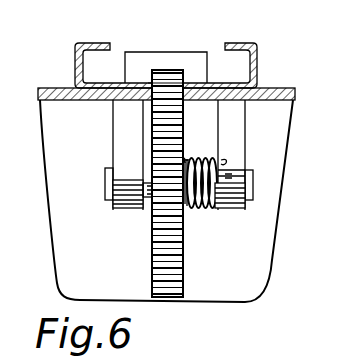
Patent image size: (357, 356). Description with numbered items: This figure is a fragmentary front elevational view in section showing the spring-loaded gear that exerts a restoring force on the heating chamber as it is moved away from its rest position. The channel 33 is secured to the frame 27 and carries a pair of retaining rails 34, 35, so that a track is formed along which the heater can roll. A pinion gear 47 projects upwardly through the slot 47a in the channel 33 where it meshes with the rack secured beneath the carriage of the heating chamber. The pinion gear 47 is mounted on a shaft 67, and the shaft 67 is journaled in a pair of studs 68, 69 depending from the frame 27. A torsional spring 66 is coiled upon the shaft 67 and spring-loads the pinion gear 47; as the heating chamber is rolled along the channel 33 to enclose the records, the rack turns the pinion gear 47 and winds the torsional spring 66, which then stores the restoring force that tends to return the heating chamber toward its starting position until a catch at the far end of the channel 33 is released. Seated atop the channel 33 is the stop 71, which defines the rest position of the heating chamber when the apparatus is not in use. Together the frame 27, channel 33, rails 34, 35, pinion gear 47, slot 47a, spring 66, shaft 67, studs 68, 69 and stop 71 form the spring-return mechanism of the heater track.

The frame 27 is at (48, 143).
The channel 33 is at (220, 83).
The retaining rail 34 is at (75, 60).
The retaining rail 35 is at (259, 66).
The pinion gear 47 is at (163, 240).
The slot 47a is at (148, 85).
The torsional spring 66 is at (205, 210).
The shaft 67 is at (108, 183).
The stud 68 is at (121, 127).
The stud 69 is at (243, 131).
The stop 71 is at (175, 55).